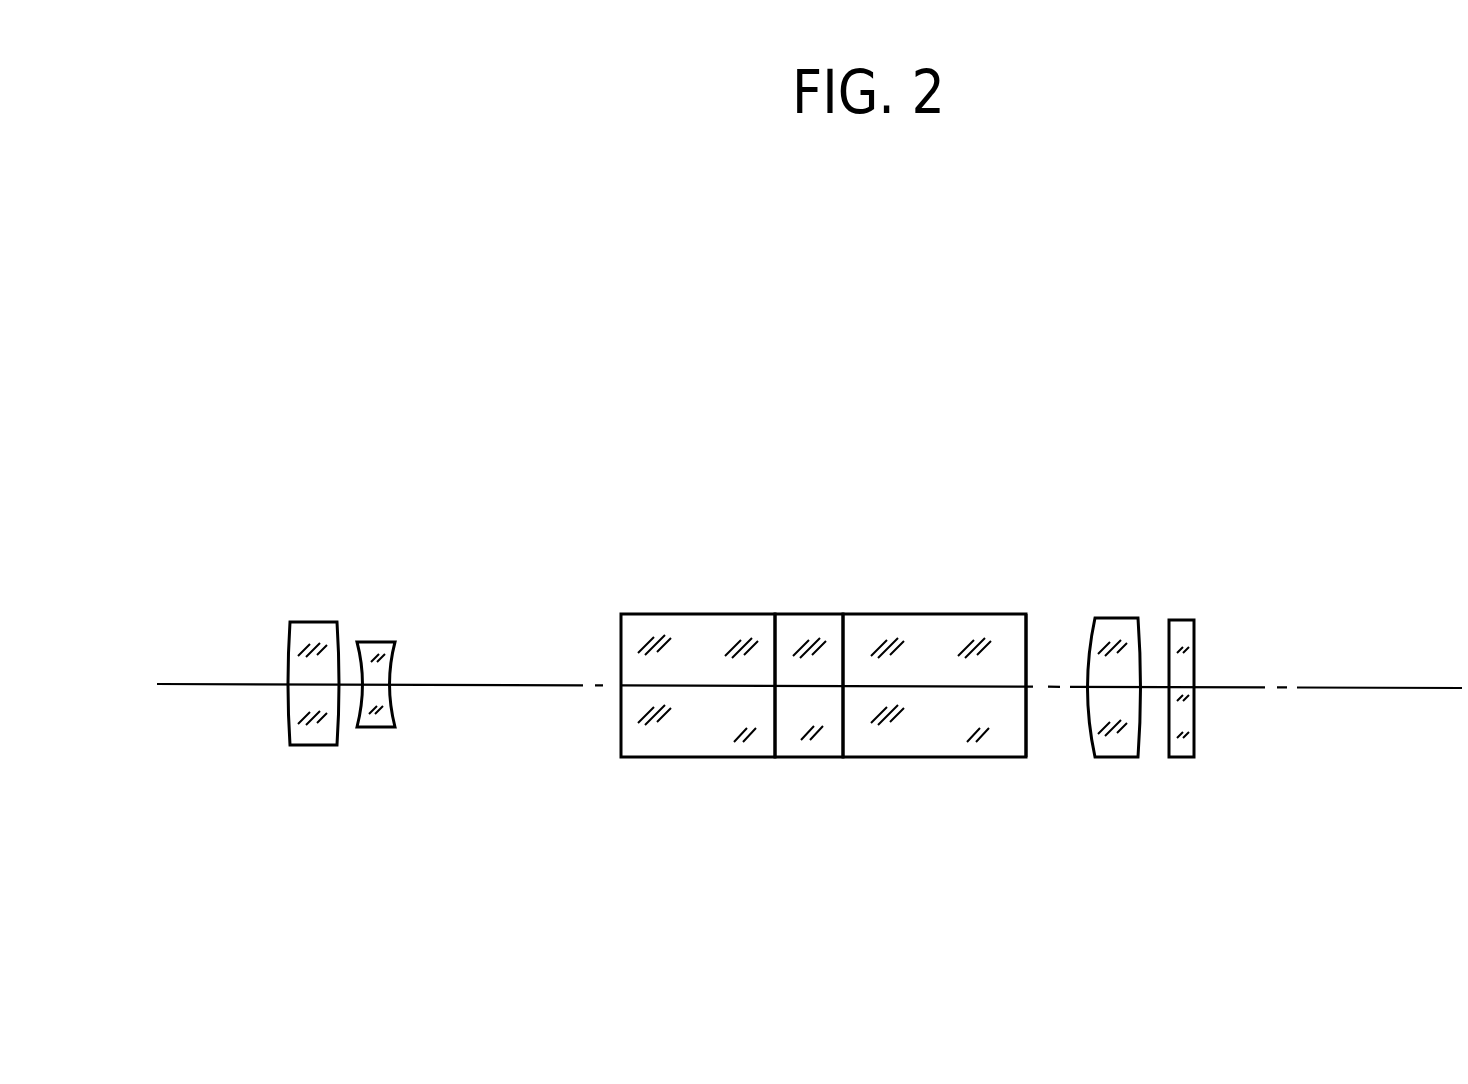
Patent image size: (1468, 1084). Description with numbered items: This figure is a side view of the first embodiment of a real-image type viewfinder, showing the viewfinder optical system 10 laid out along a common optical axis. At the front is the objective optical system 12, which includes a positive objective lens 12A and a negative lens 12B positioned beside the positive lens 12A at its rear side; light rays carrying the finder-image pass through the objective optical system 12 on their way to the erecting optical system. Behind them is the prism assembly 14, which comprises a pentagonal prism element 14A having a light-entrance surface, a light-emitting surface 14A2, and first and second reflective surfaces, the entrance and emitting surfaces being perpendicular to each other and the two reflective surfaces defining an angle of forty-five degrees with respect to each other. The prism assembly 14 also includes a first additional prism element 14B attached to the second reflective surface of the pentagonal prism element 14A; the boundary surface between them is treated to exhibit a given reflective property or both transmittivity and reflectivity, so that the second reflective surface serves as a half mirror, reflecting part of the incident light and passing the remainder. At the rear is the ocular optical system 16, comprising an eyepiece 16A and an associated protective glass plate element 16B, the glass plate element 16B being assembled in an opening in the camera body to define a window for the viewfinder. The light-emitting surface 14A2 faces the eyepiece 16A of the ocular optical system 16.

The viewfinder optical system 10 is at (854, 599).
The objective optical system 12 is at (354, 706).
The positive objective lens 12A is at (315, 622).
The negative lens 12B is at (380, 642).
The prism assembly 14 is at (827, 605).
The pentagonal prism element 14A is at (930, 733).
The light-emitting surface 14A2 is at (1039, 635).
The first additional prism element 14B is at (697, 733).
The ocular optical system 16 is at (1200, 762).
The eyepiece 16A is at (1117, 760).
The protective glass plate element 16B is at (1185, 773).